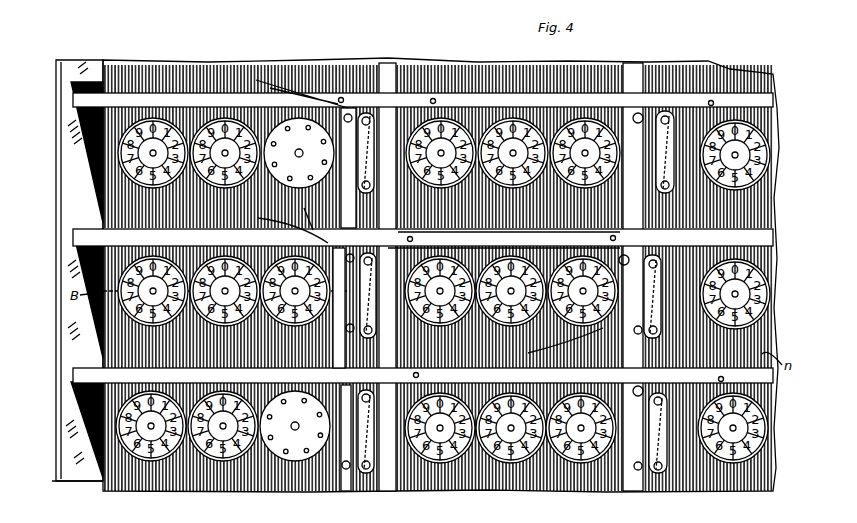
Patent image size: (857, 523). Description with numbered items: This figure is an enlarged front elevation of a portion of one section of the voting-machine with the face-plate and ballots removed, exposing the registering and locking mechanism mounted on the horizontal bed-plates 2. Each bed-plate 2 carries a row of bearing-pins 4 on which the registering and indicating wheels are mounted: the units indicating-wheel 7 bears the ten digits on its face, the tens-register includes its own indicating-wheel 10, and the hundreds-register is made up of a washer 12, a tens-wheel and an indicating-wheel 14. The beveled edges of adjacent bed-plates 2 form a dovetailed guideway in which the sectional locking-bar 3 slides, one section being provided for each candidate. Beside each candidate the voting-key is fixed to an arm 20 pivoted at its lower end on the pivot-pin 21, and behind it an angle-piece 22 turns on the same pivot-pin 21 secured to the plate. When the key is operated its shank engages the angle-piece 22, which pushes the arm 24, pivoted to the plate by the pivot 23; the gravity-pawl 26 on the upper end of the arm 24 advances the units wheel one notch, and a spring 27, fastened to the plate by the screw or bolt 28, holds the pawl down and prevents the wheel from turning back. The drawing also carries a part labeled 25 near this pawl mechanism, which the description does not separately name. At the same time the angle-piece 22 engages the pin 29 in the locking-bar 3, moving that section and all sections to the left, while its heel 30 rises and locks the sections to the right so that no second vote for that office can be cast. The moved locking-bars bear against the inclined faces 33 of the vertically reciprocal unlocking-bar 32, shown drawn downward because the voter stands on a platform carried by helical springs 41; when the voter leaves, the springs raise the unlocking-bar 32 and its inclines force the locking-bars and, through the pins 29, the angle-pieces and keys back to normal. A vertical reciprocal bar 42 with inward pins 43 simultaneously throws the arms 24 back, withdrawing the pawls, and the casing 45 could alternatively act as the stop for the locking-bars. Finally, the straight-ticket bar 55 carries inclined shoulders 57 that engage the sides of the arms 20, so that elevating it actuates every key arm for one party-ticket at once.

The bed-plate 2 is at (765, 108).
The locking-bar 3 is at (752, 233).
The bearing-pin 4 is at (728, 286).
The indicating-wheel 7 is at (585, 450).
The indicating-wheel 10 is at (495, 452).
The washer 12 is at (63, 502).
The indicating-wheel 14 is at (120, 430).
The arm 20 is at (522, 228).
The pivot-pin 21 is at (366, 503).
The angle-piece 22 is at (362, 72).
The pivot 23 is at (690, 190).
The arm 24 is at (350, 168).
The spring 25 is at (300, 217).
The gravity-pawl 26 is at (312, 117).
The spring 27 is at (636, 409).
The screw or bolt 28 is at (250, 72).
The pin 29 is at (350, 72).
The heel 30 is at (405, 248).
The unlocking-bar 32 is at (239, 380).
The inclined faces 33 is at (76, 150).
The helical springs 41 is at (624, 484).
The vertical reciprocal bar 42 is at (327, 62).
The pins 43 is at (298, 472).
The casing 45 is at (50, 300).
The straight-ticket bar 55 is at (385, 56).
The inclined faces or shoulders 57 is at (516, 384).